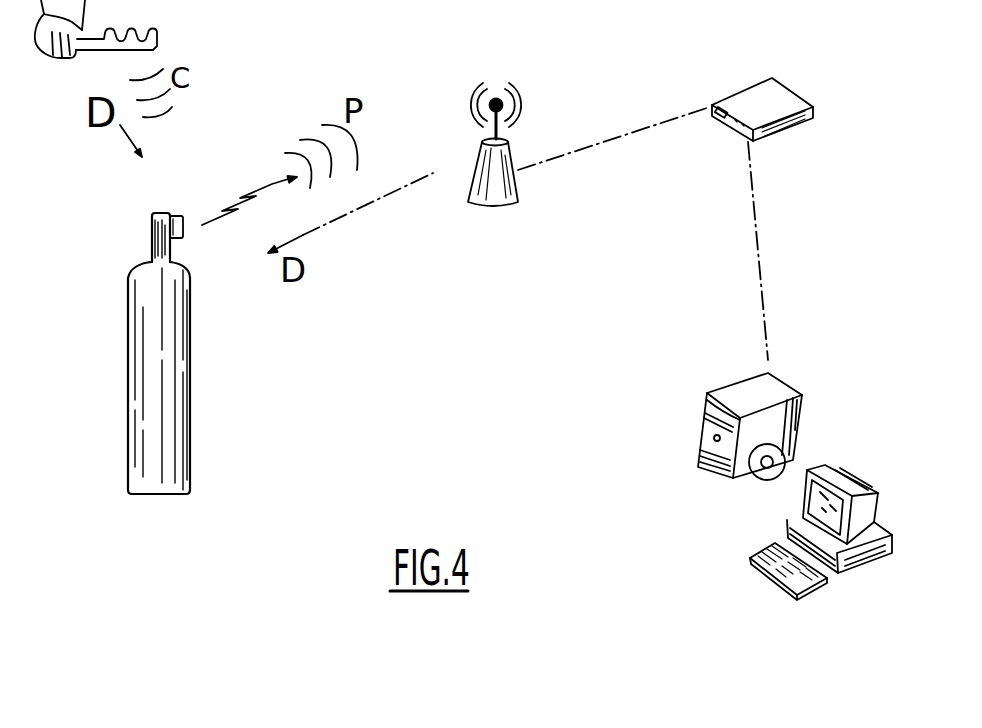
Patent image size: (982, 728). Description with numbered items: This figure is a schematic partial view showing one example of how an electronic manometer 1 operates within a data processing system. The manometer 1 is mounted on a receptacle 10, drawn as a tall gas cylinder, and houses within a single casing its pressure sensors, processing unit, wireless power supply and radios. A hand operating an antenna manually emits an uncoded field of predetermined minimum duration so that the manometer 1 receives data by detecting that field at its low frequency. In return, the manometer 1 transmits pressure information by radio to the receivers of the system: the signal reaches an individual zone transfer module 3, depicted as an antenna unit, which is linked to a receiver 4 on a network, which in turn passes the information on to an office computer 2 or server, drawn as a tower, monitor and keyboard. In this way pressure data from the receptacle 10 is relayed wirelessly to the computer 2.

The electronic manometer 1 is at (178, 222).
The office computer 2 is at (702, 527).
The individual zone transfer module 3 is at (487, 218).
The receiver on a network 4 is at (825, 102).
The receptacle 10 is at (163, 350).